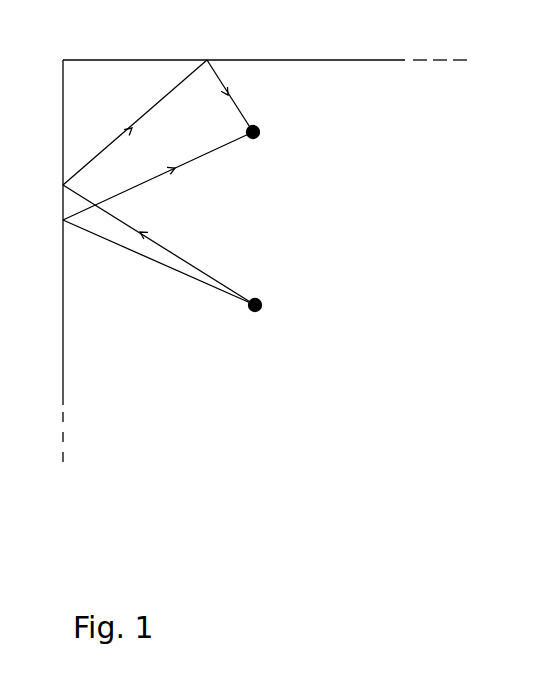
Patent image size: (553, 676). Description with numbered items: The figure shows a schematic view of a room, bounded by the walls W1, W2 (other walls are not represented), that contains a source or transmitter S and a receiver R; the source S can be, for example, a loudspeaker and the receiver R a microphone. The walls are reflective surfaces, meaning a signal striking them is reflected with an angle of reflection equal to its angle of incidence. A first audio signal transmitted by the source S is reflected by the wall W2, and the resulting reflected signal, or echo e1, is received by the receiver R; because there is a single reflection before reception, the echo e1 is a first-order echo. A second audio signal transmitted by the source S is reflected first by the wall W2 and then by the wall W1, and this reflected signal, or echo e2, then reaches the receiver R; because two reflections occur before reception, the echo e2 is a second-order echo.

The wall W1 is at (292, 61).
The wall W2 is at (70, 286).
The receiver R is at (265, 143).
The source S is at (173, 261).
The first-order echo e1 is at (158, 176).
The second-order echo e2 is at (167, 122).